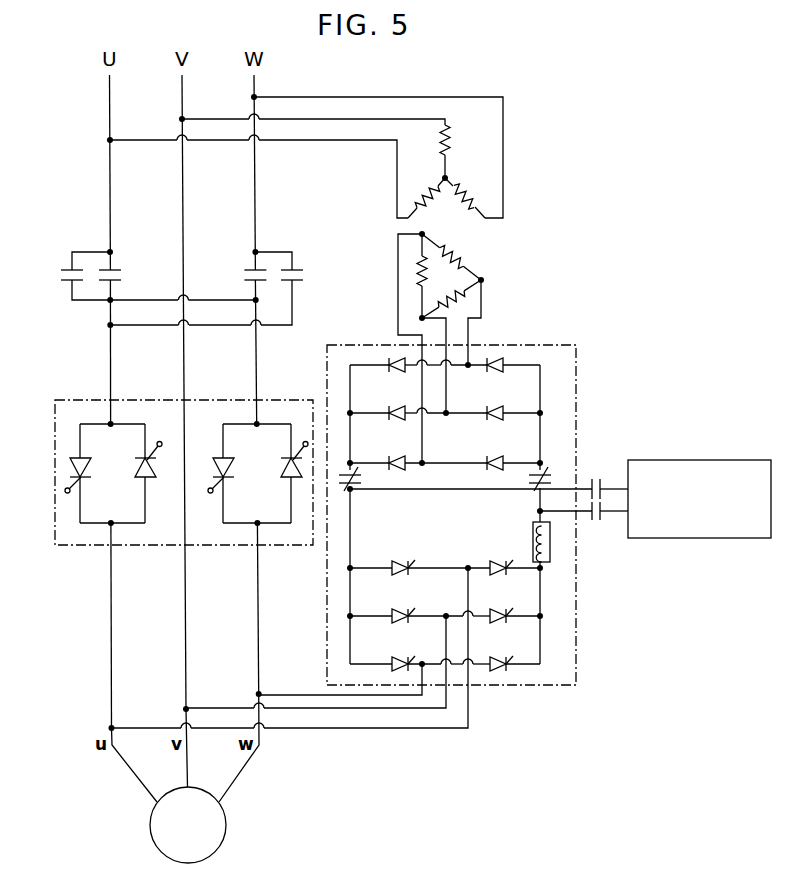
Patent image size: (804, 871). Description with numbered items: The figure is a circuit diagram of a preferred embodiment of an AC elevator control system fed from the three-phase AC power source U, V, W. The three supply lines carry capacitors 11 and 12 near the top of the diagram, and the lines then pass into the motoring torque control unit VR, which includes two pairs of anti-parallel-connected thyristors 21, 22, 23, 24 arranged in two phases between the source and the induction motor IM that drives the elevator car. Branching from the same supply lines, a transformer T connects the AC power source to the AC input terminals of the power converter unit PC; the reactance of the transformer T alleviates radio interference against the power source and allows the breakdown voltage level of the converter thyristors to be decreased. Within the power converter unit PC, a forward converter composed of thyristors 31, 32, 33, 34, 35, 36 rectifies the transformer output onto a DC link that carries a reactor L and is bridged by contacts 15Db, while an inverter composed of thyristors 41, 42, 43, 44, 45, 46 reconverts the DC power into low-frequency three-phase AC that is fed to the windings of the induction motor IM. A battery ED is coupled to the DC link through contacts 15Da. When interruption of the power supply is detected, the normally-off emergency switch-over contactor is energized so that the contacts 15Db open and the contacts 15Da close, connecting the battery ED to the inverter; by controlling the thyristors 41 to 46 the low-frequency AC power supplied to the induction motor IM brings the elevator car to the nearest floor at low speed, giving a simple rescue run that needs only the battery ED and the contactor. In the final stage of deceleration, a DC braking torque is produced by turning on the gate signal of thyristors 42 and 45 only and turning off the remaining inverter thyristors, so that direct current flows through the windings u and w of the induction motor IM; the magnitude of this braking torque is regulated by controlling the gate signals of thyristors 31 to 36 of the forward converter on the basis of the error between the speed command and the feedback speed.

The capacitor 11 is at (138, 262).
The capacitor 12 is at (61, 274).
The thyristor 21 is at (105, 467).
The thyristor 22 is at (133, 474).
The thyristor 23 is at (234, 468).
The thyristor 24 is at (280, 474).
The thyristor 31 is at (395, 372).
The thyristor 32 is at (494, 373).
The thyristor 33 is at (395, 419).
The thyristor 34 is at (494, 419).
The thyristor 35 is at (394, 433).
The thyristor 36 is at (492, 454).
The thyristor 41 is at (400, 558).
The thyristor 42 is at (500, 558).
The thyristor 43 is at (400, 606).
The thyristor 44 is at (497, 611).
The thyristor 45 is at (400, 654).
The thyristor 46 is at (497, 659).
The contact 15Da is at (597, 475).
The contact 15Db is at (362, 476).
The reactor L is at (532, 531).
The power converter unit PC is at (528, 345).
The motoring torque control unit VR is at (95, 400).
The induction motor IM is at (227, 818).
The battery ED is at (678, 538).
The transformer T is at (485, 258).